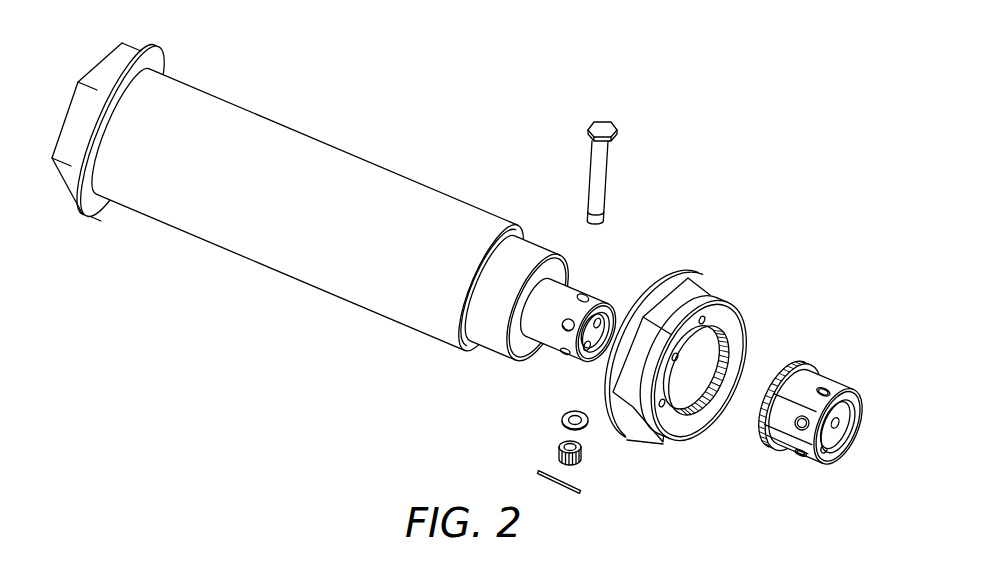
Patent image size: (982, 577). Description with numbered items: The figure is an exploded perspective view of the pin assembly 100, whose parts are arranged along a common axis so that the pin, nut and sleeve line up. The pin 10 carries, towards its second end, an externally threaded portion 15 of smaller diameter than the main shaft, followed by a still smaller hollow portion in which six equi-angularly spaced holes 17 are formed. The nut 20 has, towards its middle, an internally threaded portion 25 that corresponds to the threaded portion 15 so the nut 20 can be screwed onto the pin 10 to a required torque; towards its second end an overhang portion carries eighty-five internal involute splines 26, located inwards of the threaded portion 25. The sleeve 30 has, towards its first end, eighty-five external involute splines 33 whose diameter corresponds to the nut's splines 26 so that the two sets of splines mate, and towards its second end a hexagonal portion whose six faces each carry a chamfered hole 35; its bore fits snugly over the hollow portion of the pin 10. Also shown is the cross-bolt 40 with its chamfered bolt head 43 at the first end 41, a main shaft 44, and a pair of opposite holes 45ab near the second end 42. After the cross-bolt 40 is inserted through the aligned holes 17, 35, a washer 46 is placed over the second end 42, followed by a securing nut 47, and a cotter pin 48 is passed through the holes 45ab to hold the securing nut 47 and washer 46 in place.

The pin assembly 100 is at (462, 266).
The pin 10 is at (303, 118).
The externally threaded portion 15 is at (493, 342).
The holes 17 is at (565, 355).
The nut 20 is at (686, 346).
The internally threaded portion 25 is at (743, 328).
The internal involute splines 26 is at (702, 435).
The sleeve 30 is at (809, 414).
The external involute splines 33 is at (798, 363).
The chamfered holes 35 is at (802, 460).
The cross-bolt 40 is at (614, 178).
The first end 41 is at (583, 107).
The bolt head 43 is at (605, 123).
The main shaft 44 is at (633, 190).
The opposite holes 45ab is at (598, 218).
The second end 42 is at (594, 228).
The washer 46 is at (560, 420).
The securing nut 47 is at (557, 452).
The pin 48 is at (583, 492).